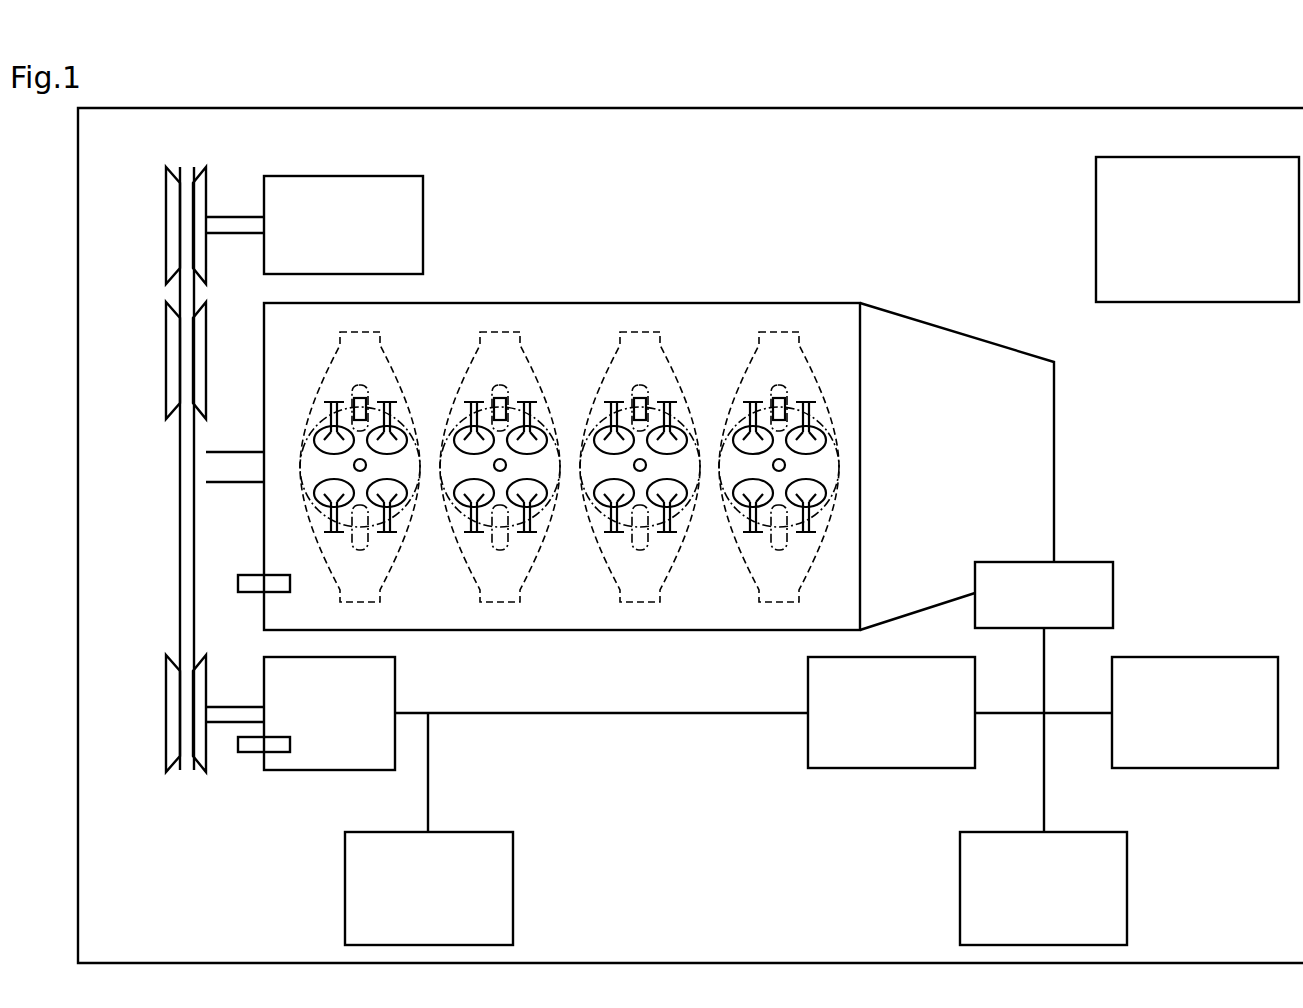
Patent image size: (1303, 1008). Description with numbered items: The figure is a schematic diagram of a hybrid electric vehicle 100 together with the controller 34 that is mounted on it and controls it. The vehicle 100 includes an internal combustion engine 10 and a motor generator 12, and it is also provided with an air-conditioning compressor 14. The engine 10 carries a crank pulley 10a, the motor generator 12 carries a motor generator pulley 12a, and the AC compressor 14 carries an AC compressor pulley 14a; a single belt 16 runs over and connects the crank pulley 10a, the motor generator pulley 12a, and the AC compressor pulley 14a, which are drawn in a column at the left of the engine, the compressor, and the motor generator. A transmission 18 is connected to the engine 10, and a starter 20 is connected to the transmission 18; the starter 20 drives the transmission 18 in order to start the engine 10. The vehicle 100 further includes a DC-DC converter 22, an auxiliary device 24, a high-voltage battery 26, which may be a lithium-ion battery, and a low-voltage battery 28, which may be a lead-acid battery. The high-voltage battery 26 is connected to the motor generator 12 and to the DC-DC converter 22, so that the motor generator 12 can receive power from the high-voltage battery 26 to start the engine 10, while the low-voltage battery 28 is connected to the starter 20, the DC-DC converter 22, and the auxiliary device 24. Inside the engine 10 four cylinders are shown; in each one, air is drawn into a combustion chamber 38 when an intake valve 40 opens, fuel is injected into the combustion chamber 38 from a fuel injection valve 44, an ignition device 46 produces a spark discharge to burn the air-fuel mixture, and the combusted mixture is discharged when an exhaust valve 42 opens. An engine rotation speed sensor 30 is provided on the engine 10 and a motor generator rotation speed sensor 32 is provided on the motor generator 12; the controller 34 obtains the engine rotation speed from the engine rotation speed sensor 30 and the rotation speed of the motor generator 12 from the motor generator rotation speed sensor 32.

The hybrid electric vehicle 100 is at (1113, 108).
The internal combustion engine 10 is at (806, 303).
The crank pulley 10a is at (166, 568).
The motor generator 12 is at (352, 770).
The motor generator pulley 12a is at (166, 735).
The air-conditioning compressor 14 is at (392, 176).
The AC compressor pulley 14a is at (166, 245).
The belt 16 is at (187, 167).
The transmission 18 is at (948, 330).
The starter 20 is at (1087, 562).
The DC-DC converter 22 is at (930, 768).
The auxiliary device 24 is at (1100, 832).
The high-voltage battery 26 is at (478, 832).
The low-voltage battery 28 is at (1230, 657).
The engine rotation speed sensor 30 is at (254, 592).
The motor generator rotation speed sensor 32 is at (254, 752).
The controller 34 is at (1240, 157).
The combustion chamber 38 is at (313, 490).
The intake valve 40 is at (330, 403).
The exhaust valve 42 is at (392, 508).
The fuel injection valve 44 is at (366, 398).
The ignition device 46 is at (368, 465).